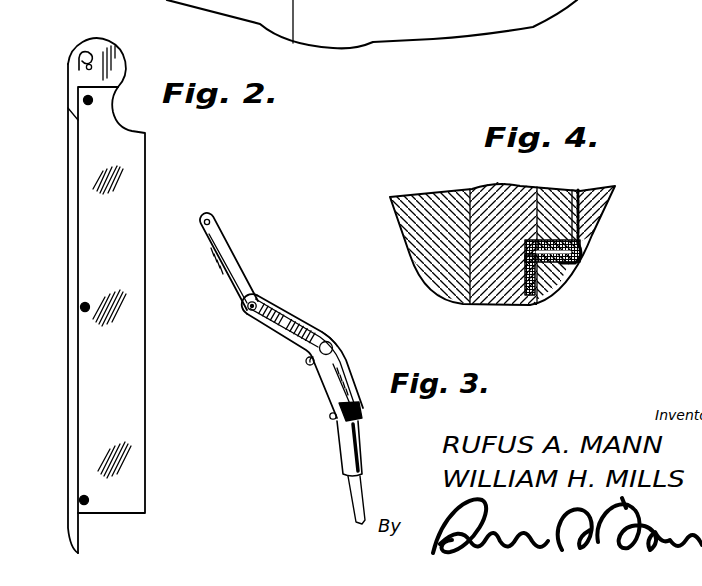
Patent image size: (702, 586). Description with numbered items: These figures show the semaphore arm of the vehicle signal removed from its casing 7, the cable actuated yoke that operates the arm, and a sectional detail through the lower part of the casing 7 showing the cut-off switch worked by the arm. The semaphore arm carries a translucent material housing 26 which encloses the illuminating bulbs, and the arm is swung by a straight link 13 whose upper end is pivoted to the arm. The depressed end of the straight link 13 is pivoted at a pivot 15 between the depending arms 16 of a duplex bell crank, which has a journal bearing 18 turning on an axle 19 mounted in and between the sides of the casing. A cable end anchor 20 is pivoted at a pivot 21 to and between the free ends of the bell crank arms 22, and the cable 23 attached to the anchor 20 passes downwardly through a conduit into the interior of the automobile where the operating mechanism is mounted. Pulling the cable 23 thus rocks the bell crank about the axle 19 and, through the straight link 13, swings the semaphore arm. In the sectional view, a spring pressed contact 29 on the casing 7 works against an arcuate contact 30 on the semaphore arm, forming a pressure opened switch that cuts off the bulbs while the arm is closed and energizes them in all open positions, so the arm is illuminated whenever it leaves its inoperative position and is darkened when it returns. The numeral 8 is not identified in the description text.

In FIG. 4, the casing 7 is at (613, 205).
In FIG. 2, the handle plate 8 is at (66, 230).
In FIG. 4, the handle plate 8 is at (496, 308).
In FIG. 3, the straight link 13 is at (233, 264).
In FIG. 3, the pivot 15 is at (243, 315).
In FIG. 3, the depending arms 16 is at (268, 328).
In FIG. 3, the journal bearing 18 is at (316, 346).
In FIG. 3, the axle 19 is at (325, 326).
In FIG. 3, the cable end anchor 20 is at (352, 418).
In FIG. 3, the pivot 21 is at (330, 421).
In FIG. 3, the bell crank arms 22 is at (328, 398).
In FIG. 3, the cable 23 is at (358, 502).
In FIG. 2, the translucent material housing 26 is at (128, 418).
In FIG. 4, the spring pressed contact 29 is at (576, 270).
In FIG. 2, the arcuate contact 30 is at (79, 60).
In FIG. 4, the arcuate contact 30 is at (540, 298).